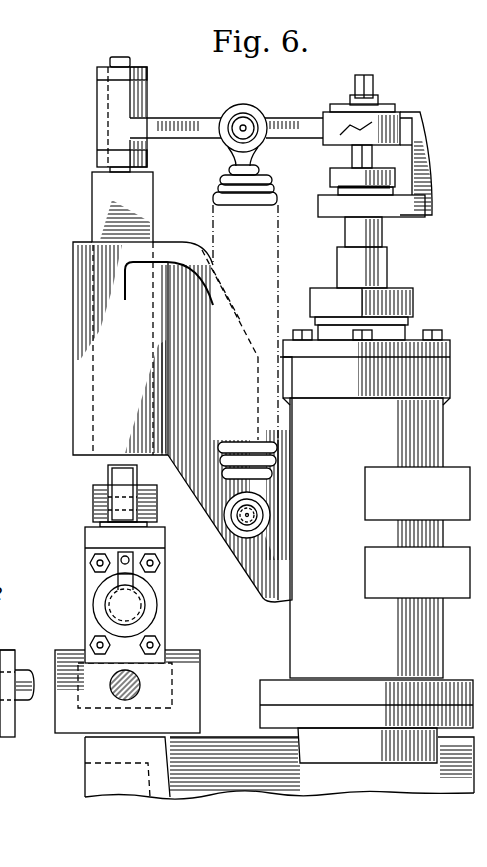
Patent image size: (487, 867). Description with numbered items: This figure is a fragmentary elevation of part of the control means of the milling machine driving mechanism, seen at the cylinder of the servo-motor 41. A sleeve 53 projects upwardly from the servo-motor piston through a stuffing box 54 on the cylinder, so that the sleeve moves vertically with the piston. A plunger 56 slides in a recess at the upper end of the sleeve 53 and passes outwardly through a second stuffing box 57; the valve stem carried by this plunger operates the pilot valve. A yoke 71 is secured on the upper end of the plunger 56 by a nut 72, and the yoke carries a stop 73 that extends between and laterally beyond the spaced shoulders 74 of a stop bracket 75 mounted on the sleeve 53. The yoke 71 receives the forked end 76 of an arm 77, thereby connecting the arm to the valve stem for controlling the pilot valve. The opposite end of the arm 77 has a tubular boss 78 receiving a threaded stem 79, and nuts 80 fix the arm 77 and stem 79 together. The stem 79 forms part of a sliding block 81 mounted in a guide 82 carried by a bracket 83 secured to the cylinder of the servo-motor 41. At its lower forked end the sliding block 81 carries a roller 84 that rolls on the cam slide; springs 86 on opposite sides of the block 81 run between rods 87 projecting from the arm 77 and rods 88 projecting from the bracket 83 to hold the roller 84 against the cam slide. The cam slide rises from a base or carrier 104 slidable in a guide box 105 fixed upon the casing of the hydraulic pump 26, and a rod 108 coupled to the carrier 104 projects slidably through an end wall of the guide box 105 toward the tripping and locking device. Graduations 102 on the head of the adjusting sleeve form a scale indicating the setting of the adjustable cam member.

The hydraulic pump 26 is at (279, 768).
The servo-motor 41 is at (432, 640).
The sleeve 53 is at (387, 272).
The stuffing box 54 is at (410, 305).
The plunger 56 is at (355, 162).
The stuffing box 57 is at (330, 183).
The yoke 71 is at (380, 112).
The nut 72 is at (373, 82).
The stop 73 is at (404, 138).
The spaced shoulders 74 is at (414, 120).
The stop bracket 75 is at (420, 210).
The forked end 76 is at (326, 112).
The arm 77 is at (178, 124).
The tubular boss 78 is at (117, 102).
The stem 79 is at (122, 57).
The nuts 80 is at (148, 73).
The sliding block 81 is at (100, 212).
The guide 82 is at (78, 337).
The bracket 83 is at (203, 475).
The roller 84 is at (113, 498).
The springs 86 is at (278, 205).
The rods 87 is at (249, 120).
The rods 88 is at (244, 528).
The graduations 102 is at (153, 614).
The base or carrier 104 is at (173, 693).
The guide box 105 is at (65, 708).
The rod 108 is at (27, 666).